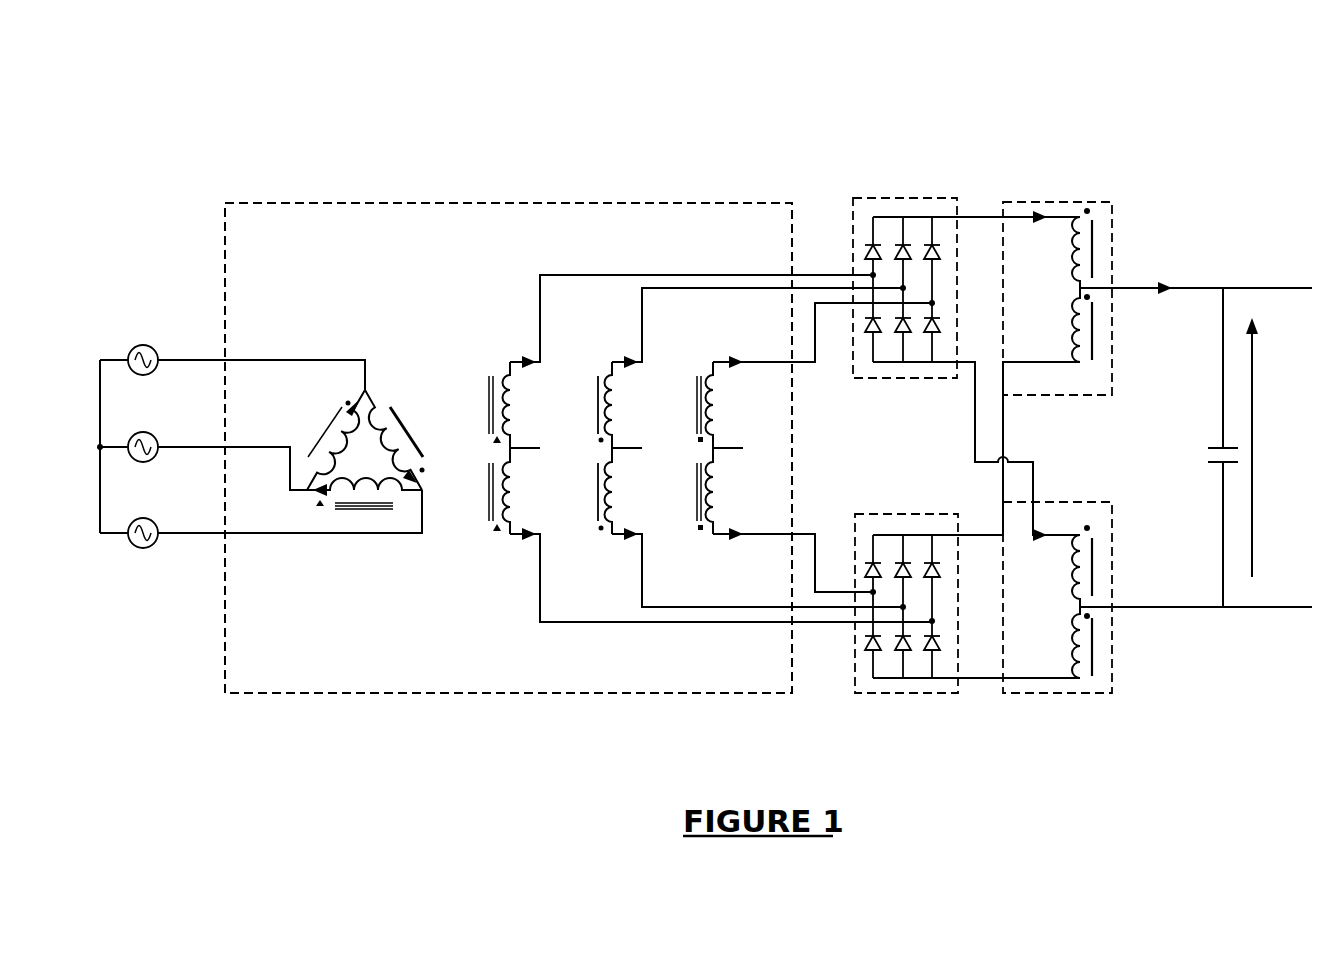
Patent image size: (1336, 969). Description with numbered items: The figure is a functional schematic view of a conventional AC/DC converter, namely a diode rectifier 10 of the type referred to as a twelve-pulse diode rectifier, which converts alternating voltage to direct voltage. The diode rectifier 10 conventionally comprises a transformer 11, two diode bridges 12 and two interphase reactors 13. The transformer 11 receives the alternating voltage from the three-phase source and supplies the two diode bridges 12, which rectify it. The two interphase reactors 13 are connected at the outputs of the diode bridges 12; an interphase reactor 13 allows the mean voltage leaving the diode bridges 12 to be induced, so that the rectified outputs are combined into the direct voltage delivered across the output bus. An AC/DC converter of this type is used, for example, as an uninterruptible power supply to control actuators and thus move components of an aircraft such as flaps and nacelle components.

The diode rectifier 10 is at (1062, 115).
The transformer 11 is at (442, 707).
The diode bridges 12 is at (860, 710).
The interphase reactors 13 is at (1050, 708).